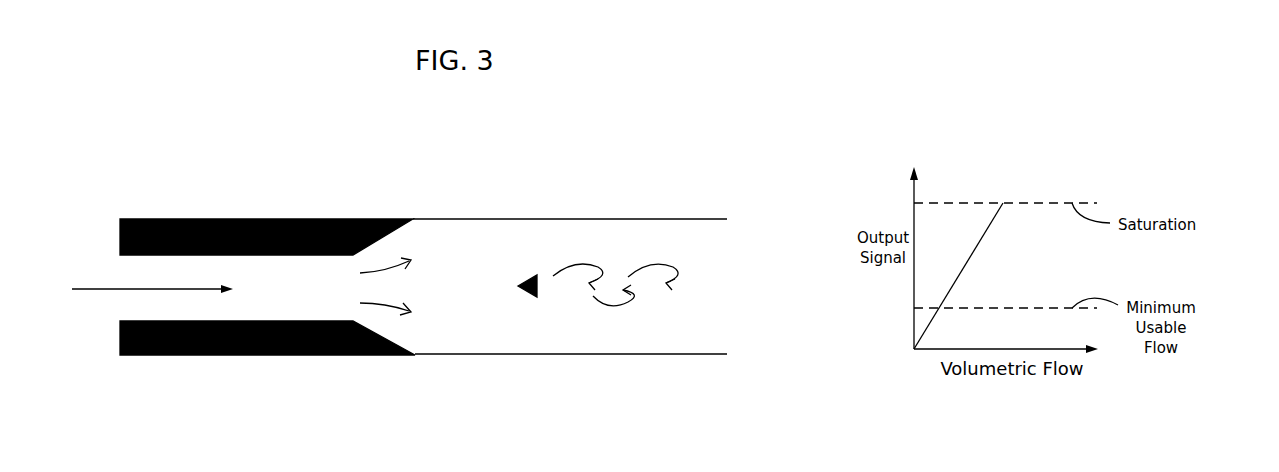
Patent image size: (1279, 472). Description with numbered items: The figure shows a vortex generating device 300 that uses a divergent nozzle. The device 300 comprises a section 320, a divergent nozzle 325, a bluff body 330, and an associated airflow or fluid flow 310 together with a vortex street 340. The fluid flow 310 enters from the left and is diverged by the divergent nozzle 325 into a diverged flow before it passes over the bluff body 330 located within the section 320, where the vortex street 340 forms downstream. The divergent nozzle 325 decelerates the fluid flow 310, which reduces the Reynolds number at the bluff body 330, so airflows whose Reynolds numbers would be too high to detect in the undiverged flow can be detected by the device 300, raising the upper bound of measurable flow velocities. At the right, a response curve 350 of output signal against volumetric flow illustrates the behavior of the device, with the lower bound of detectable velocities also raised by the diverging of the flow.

The vortex generating device 300 is at (665, 131).
The fluid flow 310 is at (118, 291).
The section 320 is at (648, 219).
The divergent nozzle 325 is at (383, 219).
The bluff body 330 is at (519, 288).
The vortex street 340 is at (693, 275).
The response curve 350 is at (992, 226).